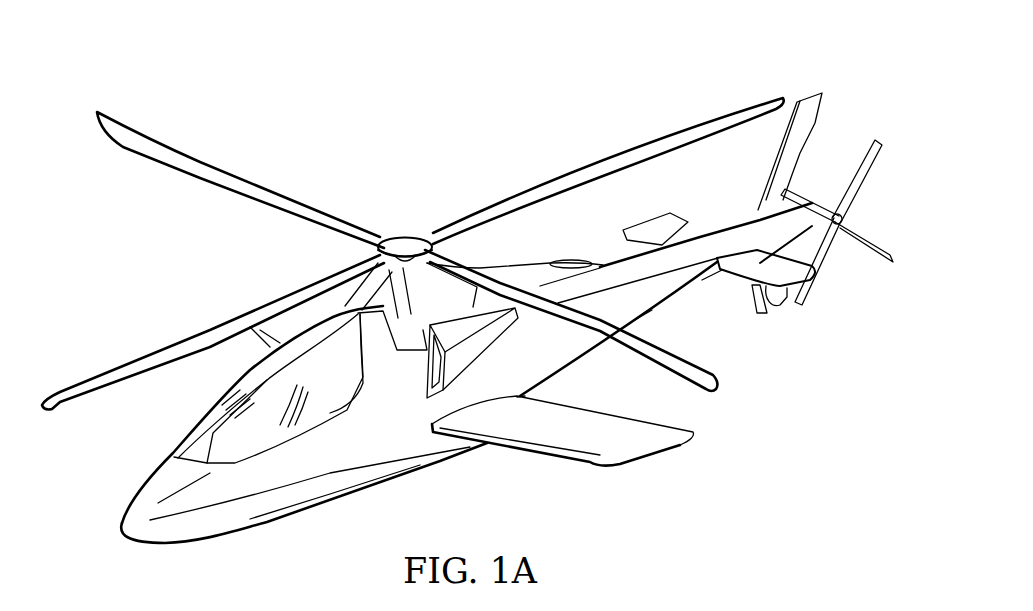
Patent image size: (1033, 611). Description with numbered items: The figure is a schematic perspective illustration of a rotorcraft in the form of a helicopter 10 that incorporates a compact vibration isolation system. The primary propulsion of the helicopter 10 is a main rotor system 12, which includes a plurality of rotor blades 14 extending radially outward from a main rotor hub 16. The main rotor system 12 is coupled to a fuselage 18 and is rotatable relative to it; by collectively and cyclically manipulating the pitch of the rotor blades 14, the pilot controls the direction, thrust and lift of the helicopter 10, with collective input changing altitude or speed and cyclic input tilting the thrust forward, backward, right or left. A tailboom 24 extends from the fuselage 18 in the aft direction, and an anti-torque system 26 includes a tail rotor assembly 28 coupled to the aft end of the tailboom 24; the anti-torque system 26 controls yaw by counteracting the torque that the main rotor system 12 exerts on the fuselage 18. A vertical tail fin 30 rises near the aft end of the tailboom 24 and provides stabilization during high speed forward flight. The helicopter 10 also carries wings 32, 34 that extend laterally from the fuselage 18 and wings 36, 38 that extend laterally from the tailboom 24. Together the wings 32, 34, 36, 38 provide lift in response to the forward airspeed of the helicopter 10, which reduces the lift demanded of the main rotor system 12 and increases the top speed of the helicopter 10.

The helicopter 10 is at (220, 78).
The main rotor system 12 is at (414, 238).
The rotor blades 14 is at (97, 112).
The main rotor hub 16 is at (395, 242).
The fuselage 18 is at (171, 546).
The tailboom 24 is at (699, 298).
The anti-torque system 26 is at (851, 163).
The tail rotor assembly 28 is at (848, 219).
The vertical tail fin 30 is at (815, 95).
The wing 32 is at (563, 466).
The wing 34 is at (252, 340).
The wing 36 is at (778, 310).
The wing 38 is at (687, 222).